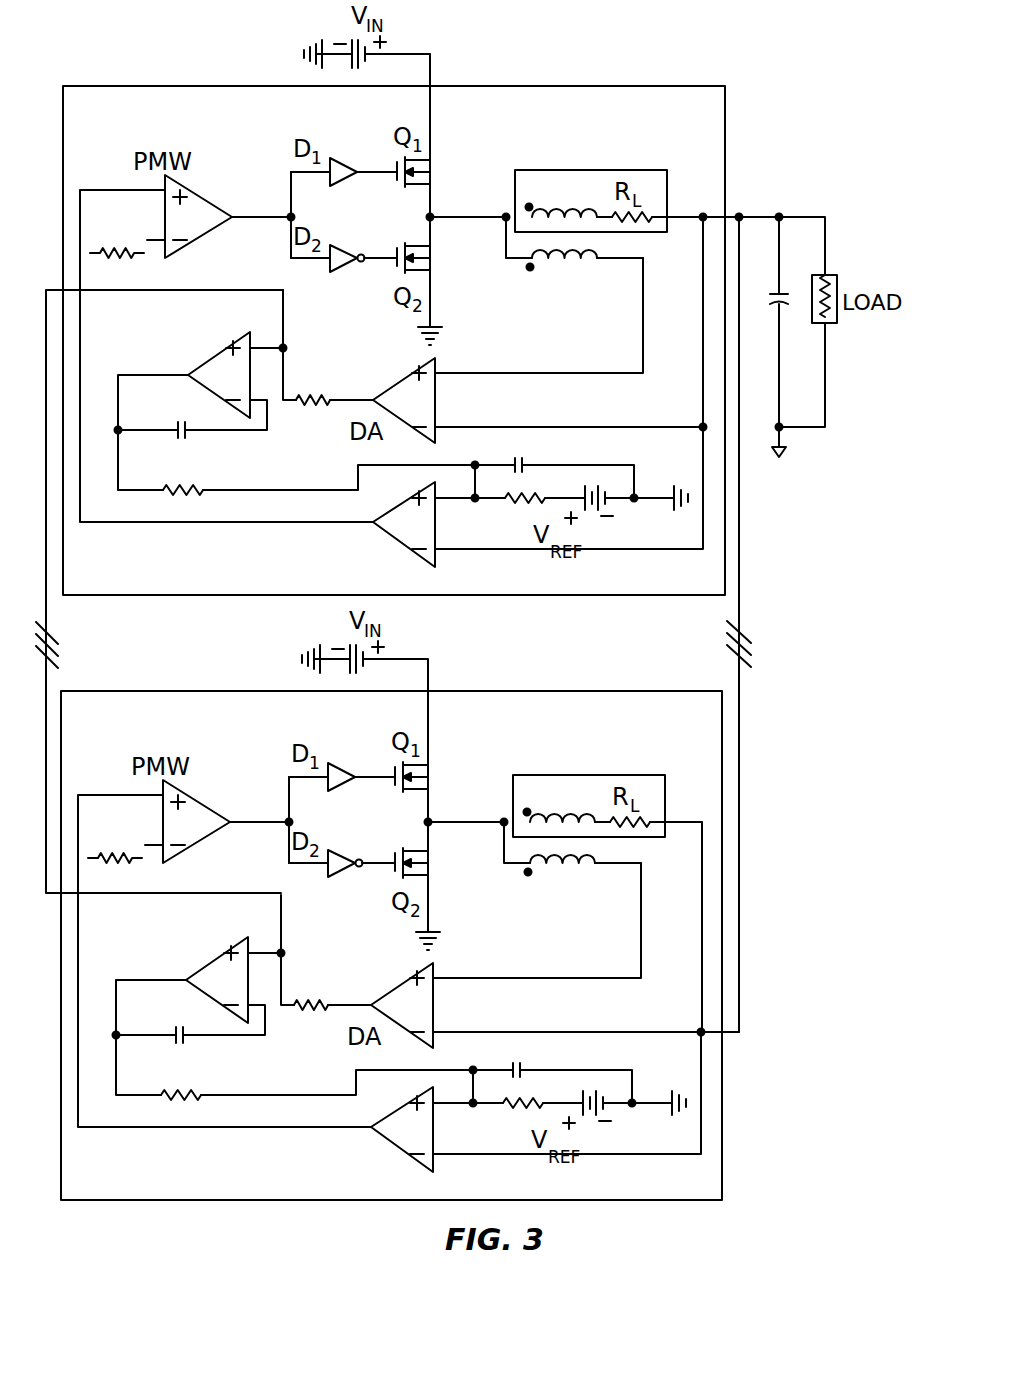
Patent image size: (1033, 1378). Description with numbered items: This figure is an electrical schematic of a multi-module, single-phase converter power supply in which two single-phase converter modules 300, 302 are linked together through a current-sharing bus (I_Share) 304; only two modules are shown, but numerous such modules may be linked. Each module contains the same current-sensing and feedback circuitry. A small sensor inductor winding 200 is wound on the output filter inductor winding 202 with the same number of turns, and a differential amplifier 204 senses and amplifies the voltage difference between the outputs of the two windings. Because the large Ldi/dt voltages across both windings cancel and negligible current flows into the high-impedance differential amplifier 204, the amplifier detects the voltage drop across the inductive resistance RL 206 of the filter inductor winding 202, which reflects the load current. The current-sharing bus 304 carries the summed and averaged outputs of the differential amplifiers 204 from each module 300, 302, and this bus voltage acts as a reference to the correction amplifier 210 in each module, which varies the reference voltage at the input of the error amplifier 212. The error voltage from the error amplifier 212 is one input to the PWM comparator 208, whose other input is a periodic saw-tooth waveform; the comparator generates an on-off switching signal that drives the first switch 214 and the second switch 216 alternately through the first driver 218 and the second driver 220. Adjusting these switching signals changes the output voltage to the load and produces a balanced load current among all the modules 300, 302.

The sensor inductor winding 200 is at (558, 263).
The output filter inductor winding 202 is at (553, 212).
The differential amplifier 204 is at (403, 377).
The inductive resistance RL 206 is at (651, 217).
The PWM comparator 208 is at (197, 239).
The correction amplifier 210 is at (219, 351).
The error amplifier 212 is at (405, 546).
The switch Q1 214 is at (428, 166).
The switch Q2 216 is at (416, 260).
The driver D1 218 is at (340, 157).
The driver D2 220 is at (339, 245).
The single-phase converter module 300 is at (737, 80).
The single-phase converter module 302 is at (735, 1185).
The current-sharing bus (I_Share) 304 is at (47, 697).